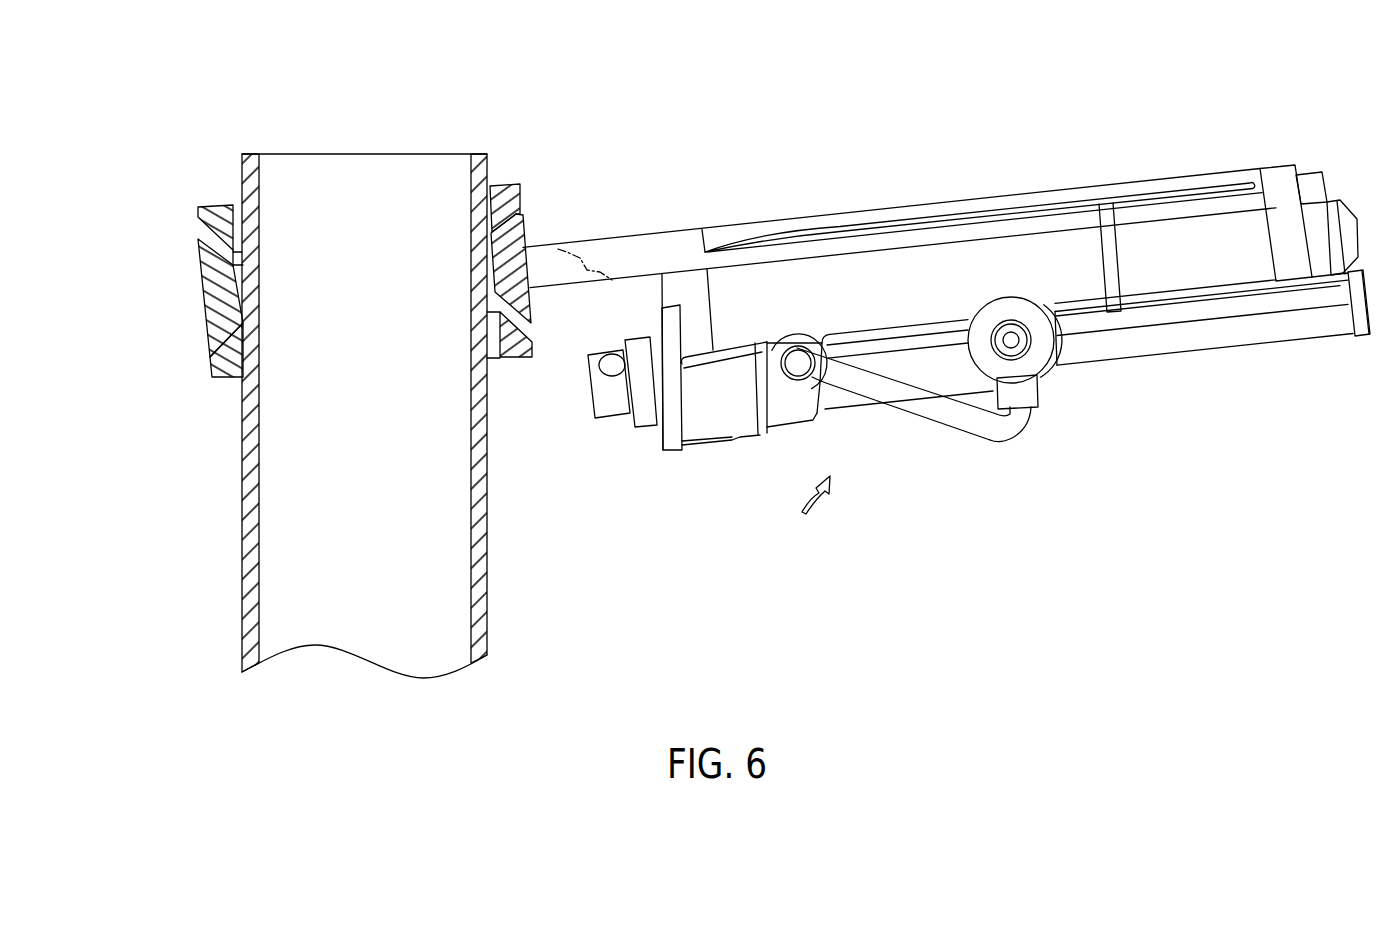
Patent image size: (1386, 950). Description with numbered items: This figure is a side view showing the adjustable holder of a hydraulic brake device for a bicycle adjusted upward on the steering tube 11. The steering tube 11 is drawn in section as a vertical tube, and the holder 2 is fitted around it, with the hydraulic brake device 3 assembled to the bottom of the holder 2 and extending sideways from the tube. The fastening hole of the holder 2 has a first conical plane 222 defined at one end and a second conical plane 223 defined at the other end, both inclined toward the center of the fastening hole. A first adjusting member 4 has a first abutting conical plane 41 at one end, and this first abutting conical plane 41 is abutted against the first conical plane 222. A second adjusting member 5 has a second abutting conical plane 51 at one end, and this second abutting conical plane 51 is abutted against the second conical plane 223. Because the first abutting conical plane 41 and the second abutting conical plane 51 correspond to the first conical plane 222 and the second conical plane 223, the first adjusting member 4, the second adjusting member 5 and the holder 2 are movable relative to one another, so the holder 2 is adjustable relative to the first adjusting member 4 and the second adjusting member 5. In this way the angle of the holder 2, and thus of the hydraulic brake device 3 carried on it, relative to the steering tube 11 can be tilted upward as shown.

The holder 2 is at (1051, 154).
The hydraulic brake device 3 is at (1174, 287).
The first adjusting member 4 is at (198, 210).
The second adjusting member 5 is at (513, 354).
The steering tube 11 is at (242, 538).
The first abutting conical plane 41 is at (520, 200).
The second abutting conical plane 51 is at (211, 358).
The first conical plane 222 is at (510, 223).
The second conical plane 223 is at (242, 324).